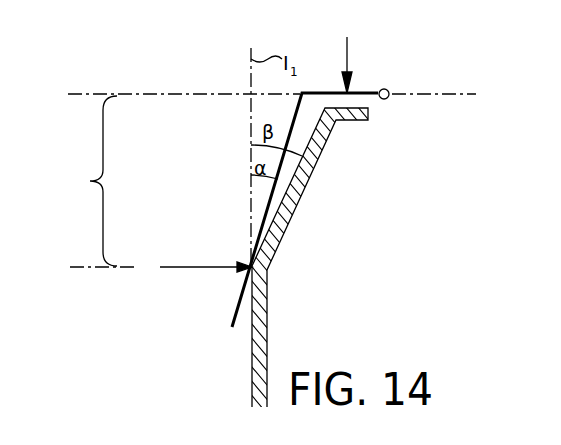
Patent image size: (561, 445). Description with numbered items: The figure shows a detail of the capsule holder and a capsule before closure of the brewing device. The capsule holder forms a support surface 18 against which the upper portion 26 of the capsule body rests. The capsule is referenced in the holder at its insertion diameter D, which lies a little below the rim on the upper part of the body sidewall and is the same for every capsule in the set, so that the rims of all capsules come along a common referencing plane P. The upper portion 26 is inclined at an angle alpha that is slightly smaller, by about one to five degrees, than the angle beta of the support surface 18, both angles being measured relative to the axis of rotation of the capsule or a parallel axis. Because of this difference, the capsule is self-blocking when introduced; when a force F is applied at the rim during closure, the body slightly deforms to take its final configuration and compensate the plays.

The support surface 18 is at (314, 130).
The upper portion 26 is at (89, 181).
The applied force F is at (353, 65).
The referencing plane P is at (443, 93).
The insertion diameter D is at (196, 267).